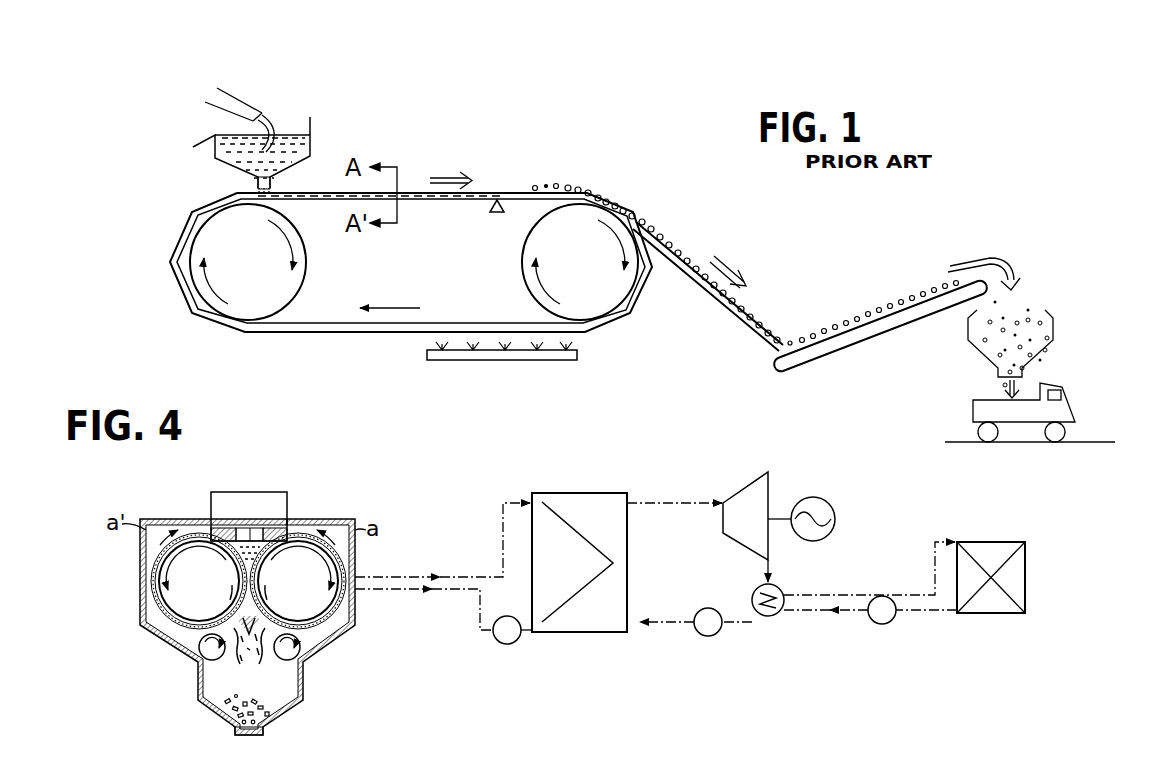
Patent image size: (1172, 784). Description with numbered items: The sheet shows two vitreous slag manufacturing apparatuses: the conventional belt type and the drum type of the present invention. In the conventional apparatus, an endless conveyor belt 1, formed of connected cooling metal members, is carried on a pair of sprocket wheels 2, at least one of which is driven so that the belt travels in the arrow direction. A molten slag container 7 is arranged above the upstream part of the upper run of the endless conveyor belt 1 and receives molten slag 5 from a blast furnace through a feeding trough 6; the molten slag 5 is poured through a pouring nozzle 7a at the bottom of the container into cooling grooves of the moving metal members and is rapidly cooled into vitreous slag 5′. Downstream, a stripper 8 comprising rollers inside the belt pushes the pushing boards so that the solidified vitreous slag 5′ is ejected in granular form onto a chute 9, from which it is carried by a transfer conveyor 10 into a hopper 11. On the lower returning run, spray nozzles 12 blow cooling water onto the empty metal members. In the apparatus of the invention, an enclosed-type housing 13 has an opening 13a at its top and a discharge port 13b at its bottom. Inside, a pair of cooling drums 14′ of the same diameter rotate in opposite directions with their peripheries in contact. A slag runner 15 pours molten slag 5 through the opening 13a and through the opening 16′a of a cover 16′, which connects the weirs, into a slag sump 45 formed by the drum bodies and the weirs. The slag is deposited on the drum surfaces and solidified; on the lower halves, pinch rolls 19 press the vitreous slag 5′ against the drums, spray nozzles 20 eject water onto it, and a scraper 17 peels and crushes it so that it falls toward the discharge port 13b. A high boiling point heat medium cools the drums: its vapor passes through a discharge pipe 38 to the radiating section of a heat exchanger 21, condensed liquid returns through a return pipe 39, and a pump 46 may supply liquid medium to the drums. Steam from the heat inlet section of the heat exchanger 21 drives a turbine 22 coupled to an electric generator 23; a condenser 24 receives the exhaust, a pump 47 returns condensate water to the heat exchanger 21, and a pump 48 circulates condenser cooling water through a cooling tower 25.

In FIG. 1, the endless conveyor belt 1 is at (313, 332).
In FIG. 1, the sprocket wheels 2 is at (195, 287).
In FIG. 1, the molten slag 5 is at (285, 140).
In FIG. 4, the molten slag 5 is at (266, 540).
In FIG. 1, the vitreous slag 5′ is at (597, 193).
In FIG. 4, the vitreous slag 5′ is at (243, 647).
In FIG. 1, the feeding trough 6 is at (235, 102).
In FIG. 1, the molten slag container 7 is at (312, 122).
In FIG. 1, the pouring nozzle 7a is at (256, 184).
In FIG. 1, the stripper 8 is at (497, 214).
In FIG. 1, the chute 9 is at (722, 300).
In FIG. 1, the transfer conveyor 10 is at (838, 352).
In FIG. 1, the hopper 11 is at (1055, 328).
In FIG. 1, the spray nozzles 12 is at (487, 360).
In FIG. 4, the enclosed-type housing 13 is at (352, 517).
In FIG. 4, the opening 13a is at (287, 522).
In FIG. 4, the discharge port 13b is at (253, 738).
In FIG. 4, the cooling drums 14′ is at (152, 602).
In FIG. 4, the slag runner 15 is at (210, 504).
In FIG. 4, the cover 16′ is at (224, 530).
In FIG. 4, the opening of cover 16′a is at (268, 530).
In FIG. 4, the scraper 17 is at (256, 628).
In FIG. 4, the pinch rolls 19 is at (199, 650).
In FIG. 4, the spray nozzles 20 is at (250, 657).
In FIG. 4, the heat exchanger 21 is at (578, 492).
In FIG. 4, the turbine 22 is at (745, 487).
In FIG. 4, the electric generator 23 is at (836, 515).
In FIG. 4, the condenser 24 is at (778, 615).
In FIG. 4, the cooling tower 25 is at (1027, 568).
In FIG. 4, the discharge pipe 38 is at (418, 575).
In FIG. 4, the return pipe 39 is at (460, 593).
In FIG. 4, the slag sump 45 is at (255, 535).
In FIG. 4, the pump 46 is at (507, 645).
In FIG. 4, the pump 47 is at (706, 636).
In FIG. 4, the pump 48 is at (880, 624).